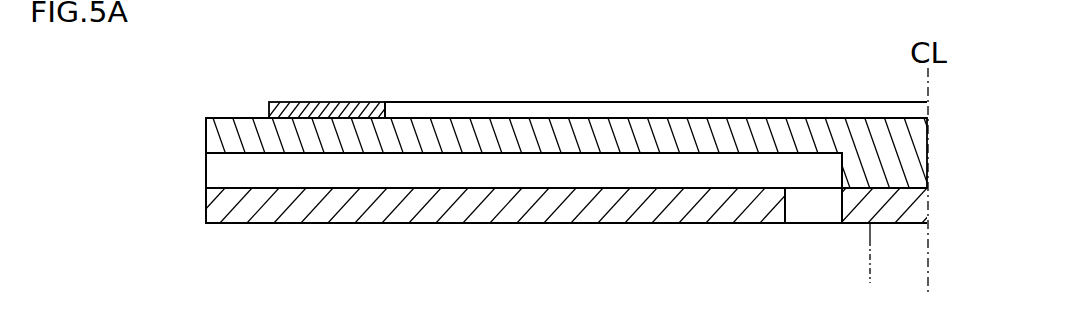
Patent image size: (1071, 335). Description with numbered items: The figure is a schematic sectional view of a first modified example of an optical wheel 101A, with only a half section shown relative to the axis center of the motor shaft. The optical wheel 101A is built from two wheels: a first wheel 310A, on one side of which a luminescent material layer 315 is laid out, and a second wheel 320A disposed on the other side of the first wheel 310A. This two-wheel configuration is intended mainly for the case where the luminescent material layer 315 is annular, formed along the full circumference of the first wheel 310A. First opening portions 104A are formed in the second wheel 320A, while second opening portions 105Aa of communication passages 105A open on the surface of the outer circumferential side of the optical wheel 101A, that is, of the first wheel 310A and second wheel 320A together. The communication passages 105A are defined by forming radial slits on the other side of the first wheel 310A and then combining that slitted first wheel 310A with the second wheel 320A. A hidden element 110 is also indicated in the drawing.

The optical wheel 101A is at (206, 110).
The luminescent material layer 315 is at (435, 100).
The first wheel 310A is at (206, 135).
The second opening portions 105Aa is at (206, 170).
The second wheel 320A is at (206, 204).
The communication passages 105A is at (387, 170).
The first opening portions 104A is at (810, 223).
The hidden element 110 is at (870, 258).